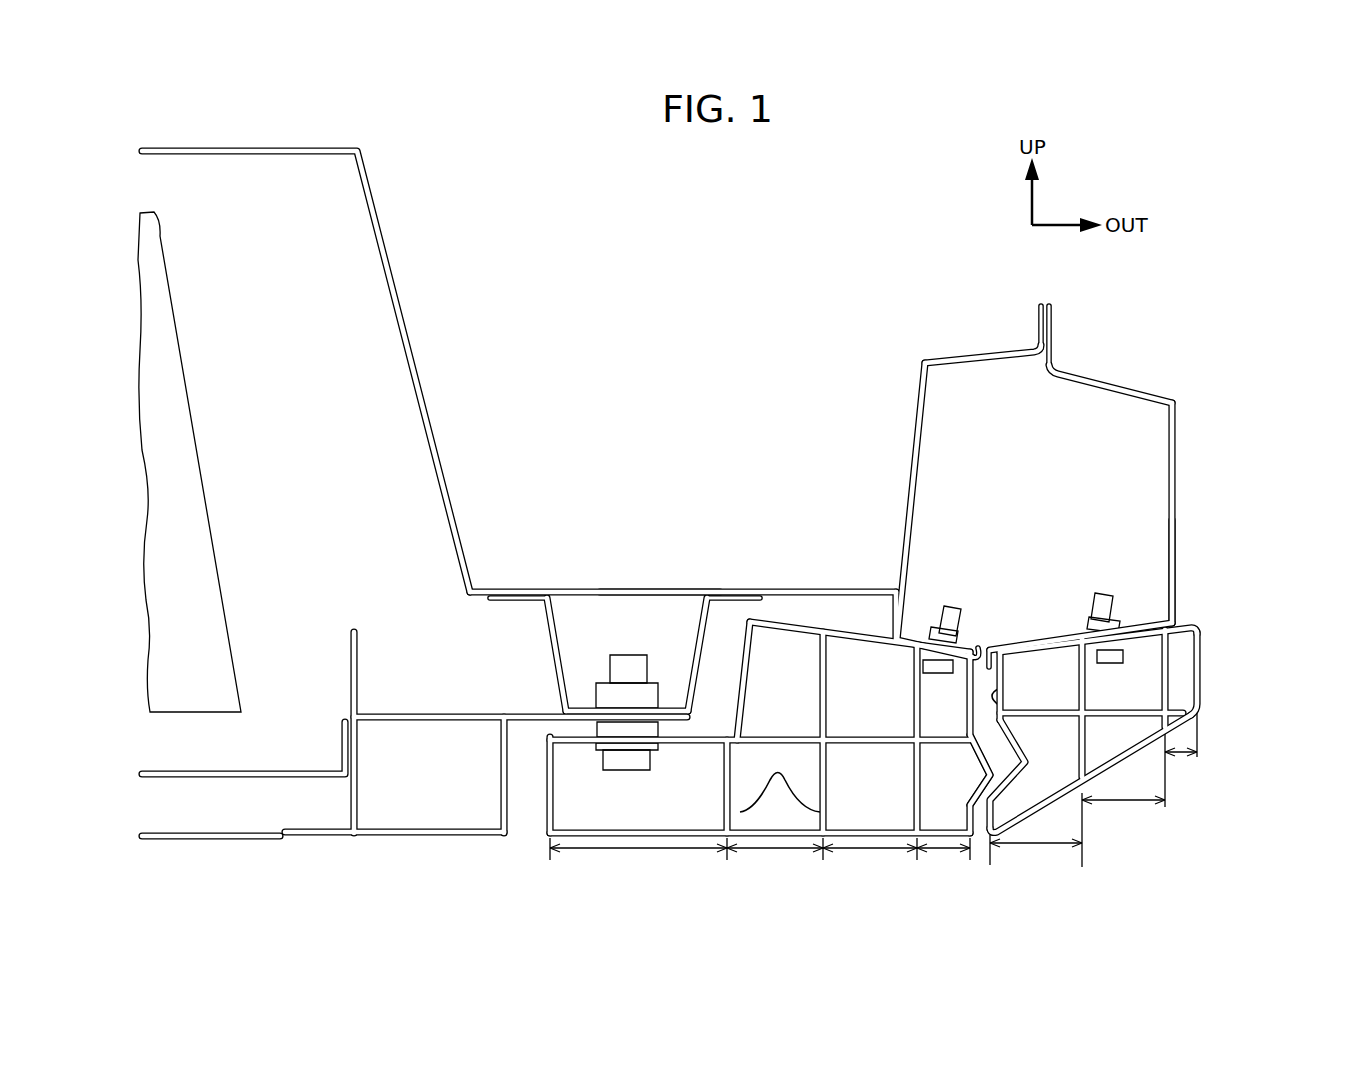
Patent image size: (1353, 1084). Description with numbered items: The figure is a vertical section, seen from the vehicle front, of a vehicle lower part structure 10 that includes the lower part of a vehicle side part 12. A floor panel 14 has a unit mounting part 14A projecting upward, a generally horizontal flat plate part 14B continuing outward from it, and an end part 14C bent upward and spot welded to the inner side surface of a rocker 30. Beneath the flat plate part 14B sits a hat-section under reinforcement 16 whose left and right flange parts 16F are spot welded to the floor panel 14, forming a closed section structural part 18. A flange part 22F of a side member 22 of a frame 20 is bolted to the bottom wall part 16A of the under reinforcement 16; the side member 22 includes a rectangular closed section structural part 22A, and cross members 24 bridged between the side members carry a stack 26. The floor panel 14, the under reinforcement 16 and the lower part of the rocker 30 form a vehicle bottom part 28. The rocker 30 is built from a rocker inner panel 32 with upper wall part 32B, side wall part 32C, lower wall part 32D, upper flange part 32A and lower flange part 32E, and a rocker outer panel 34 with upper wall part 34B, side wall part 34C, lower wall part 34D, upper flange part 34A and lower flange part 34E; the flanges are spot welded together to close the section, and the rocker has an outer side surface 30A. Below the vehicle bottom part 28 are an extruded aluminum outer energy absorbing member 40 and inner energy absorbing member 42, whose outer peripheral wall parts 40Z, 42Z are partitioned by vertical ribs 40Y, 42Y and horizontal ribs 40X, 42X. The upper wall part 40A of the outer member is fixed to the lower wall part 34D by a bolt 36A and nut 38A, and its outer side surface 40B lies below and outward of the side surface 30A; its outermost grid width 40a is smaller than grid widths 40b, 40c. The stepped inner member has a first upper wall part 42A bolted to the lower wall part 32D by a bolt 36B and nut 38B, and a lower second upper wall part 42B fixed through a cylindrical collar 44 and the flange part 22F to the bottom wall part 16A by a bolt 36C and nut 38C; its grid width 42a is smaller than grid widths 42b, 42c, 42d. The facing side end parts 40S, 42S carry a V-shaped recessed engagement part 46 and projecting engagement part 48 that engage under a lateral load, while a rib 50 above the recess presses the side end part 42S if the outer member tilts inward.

The vehicle lower part structure 10 is at (891, 765).
The vehicle side part 12 is at (1073, 457).
The floor panel 14 is at (519, 395).
The unit mounting part 14A is at (414, 332).
The flat plate part 14B is at (634, 588).
The end part 14C is at (892, 558).
The under reinforcement 16 is at (615, 654).
The bottom wall part 16A is at (623, 669).
The flange parts 16F is at (522, 602).
The closed section structural part 18 is at (666, 580).
The frame 20 is at (381, 622).
The side member 22 is at (486, 753).
The closed section structural part 22A is at (395, 847).
The flange part 22F is at (575, 727).
The cross member 24 is at (248, 770).
The stack 26 is at (232, 465).
The vehicle bottom part 28 is at (1073, 469).
The rocker 30 is at (1064, 469).
The side surface 30A is at (1178, 495).
The rocker inner panel 32 is at (933, 465).
The upper flange part 32A is at (1037, 330).
The upper wall part 32B is at (960, 358).
The side wall part 32C is at (910, 440).
The lower wall part 32D is at (916, 600).
The lower flange part 32E is at (976, 646).
The rocker outer panel 34 is at (1146, 473).
The upper flange part 34A is at (1053, 330).
The upper wall part 34B is at (1112, 378).
The side wall part 34C is at (1178, 445).
The lower wall part 34D is at (1140, 628).
The lower flange part 34E is at (993, 648).
The bolt 36A is at (1096, 592).
The bolt 36B is at (968, 602).
The bolt 36C is at (640, 656).
The nut 38A is at (1085, 616).
The nut 38B is at (940, 626).
The nut 38C is at (605, 680).
The outer energy absorbing member 40 is at (1139, 747).
The upper wall part 40A is at (1200, 648).
The side surface 40B is at (1201, 665).
The outer peripheral wall part 40Z is at (1205, 683).
The side end part 40S is at (1000, 686).
The horizontal rib 40X is at (1143, 718).
The vertical ribs 40Y is at (1153, 657).
The grid width 40a is at (1180, 758).
The grid width 40b is at (1122, 801).
The grid width 40c is at (1037, 845).
The inner energy absorbing member 42 is at (740, 769).
The first upper wall part 42A is at (863, 652).
The second upper wall part 42B is at (683, 747).
The side end part 42S is at (974, 785).
The horizontal rib 42X is at (786, 726).
The vertical ribs 42Y is at (903, 817).
The outer peripheral wall part 42Z is at (547, 797).
The grid width 42a is at (944, 849).
The grid width 42b is at (872, 849).
The grid width 42c is at (777, 849).
The grid width 42d is at (642, 849).
The cylindrical collar 44 is at (650, 733).
The recessed engagement part 46 is at (986, 793).
The projecting engagement part 48 is at (1020, 765).
The rib 50 is at (988, 703).